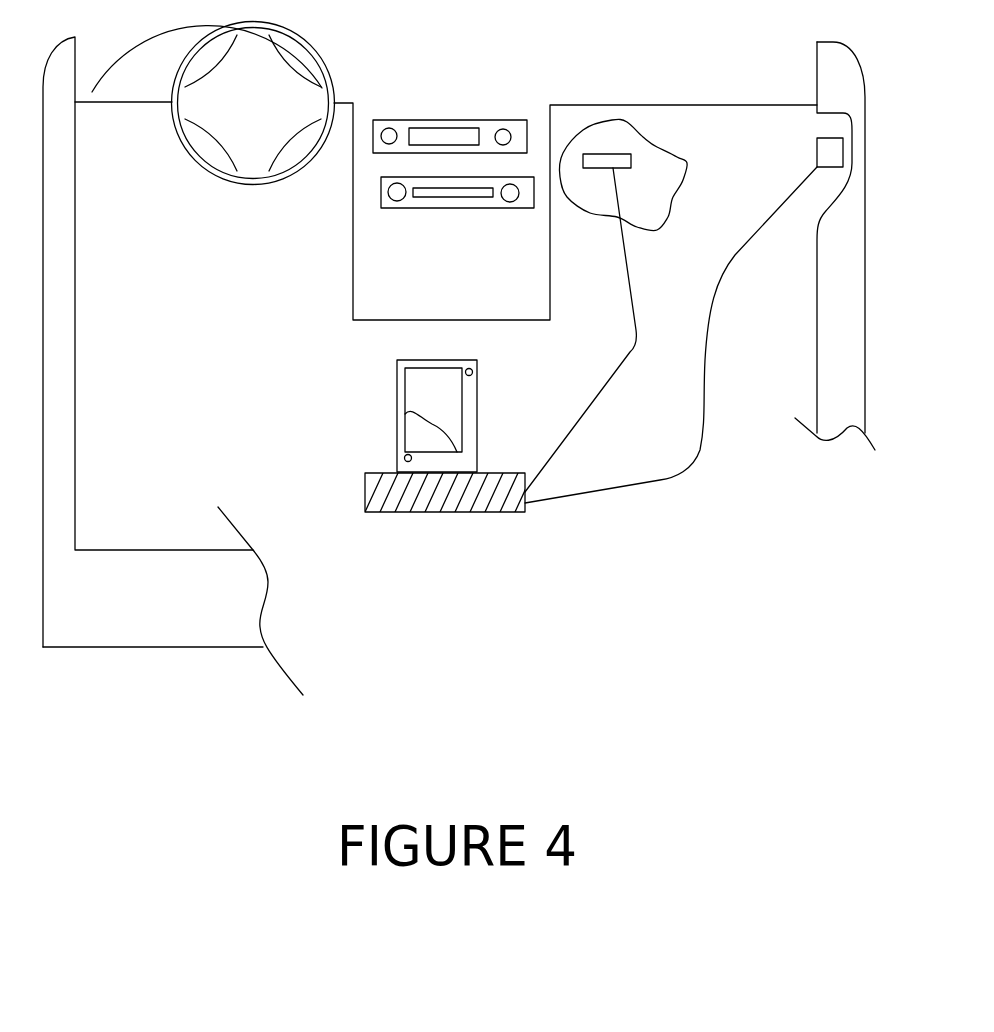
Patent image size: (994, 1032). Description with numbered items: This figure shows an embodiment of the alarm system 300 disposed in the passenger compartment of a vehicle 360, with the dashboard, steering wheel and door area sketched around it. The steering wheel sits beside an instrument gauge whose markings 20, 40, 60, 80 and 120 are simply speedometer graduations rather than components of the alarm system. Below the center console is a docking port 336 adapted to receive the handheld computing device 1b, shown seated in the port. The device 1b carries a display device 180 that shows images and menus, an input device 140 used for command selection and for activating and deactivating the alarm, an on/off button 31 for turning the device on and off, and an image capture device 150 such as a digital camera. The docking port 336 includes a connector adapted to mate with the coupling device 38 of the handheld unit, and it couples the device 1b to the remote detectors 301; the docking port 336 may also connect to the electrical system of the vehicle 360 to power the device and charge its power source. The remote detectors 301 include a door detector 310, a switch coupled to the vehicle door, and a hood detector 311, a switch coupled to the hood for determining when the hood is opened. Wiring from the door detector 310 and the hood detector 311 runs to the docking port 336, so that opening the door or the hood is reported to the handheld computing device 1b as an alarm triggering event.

The handheld computing device 1b is at (405, 397).
The on/off button 31 is at (406, 455).
The coupling device 38 is at (816, 347).
The input device 140 is at (431, 397).
The image capture device 150 is at (473, 372).
The display device 180 is at (431, 433).
The alarm system 300 is at (688, 575).
The remote detectors 301 is at (735, 315).
The door detector 310 is at (817, 147).
The hood detector 311 is at (631, 160).
The docking port 336 is at (485, 513).
The vehicle 360 is at (170, 609).
The speedometer marking 20 is at (111, 87).
The speedometer marking 40 is at (131, 65).
The speedometer marking 60 is at (163, 52).
The speedometer marking 80 is at (195, 45).
The speedometer marking 120 is at (213, 103).